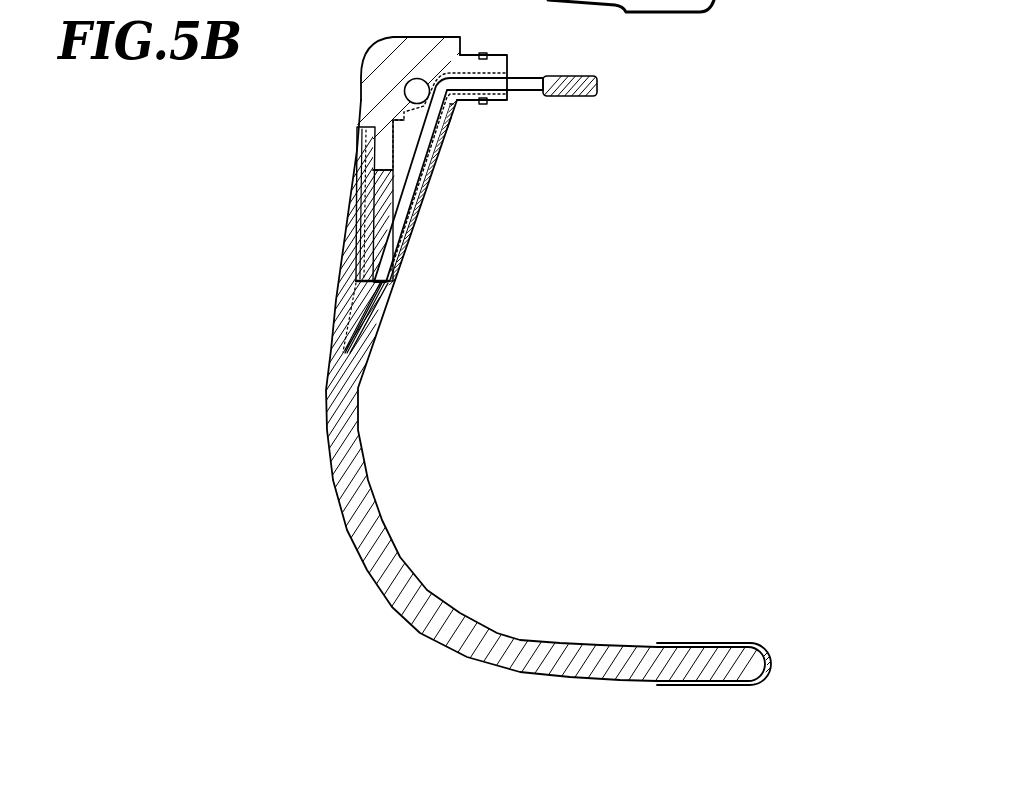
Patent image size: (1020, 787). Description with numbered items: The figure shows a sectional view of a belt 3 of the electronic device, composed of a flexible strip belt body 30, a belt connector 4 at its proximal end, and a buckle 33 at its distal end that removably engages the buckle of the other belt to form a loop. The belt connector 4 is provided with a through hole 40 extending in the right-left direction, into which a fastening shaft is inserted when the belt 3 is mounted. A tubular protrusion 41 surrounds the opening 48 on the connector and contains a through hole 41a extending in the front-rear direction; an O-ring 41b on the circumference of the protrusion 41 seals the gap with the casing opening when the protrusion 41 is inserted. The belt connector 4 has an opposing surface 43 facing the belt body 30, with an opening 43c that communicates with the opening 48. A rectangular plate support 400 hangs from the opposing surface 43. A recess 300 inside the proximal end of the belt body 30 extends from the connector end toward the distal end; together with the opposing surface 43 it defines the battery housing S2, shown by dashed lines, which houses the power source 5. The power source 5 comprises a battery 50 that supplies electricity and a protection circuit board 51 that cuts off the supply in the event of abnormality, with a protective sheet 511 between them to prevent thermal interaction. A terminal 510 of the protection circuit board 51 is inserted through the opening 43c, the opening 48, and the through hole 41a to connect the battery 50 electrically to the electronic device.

The belt 3 is at (531, 357).
The belt body 30 is at (326, 414).
The buckle 33 is at (764, 649).
The belt connector 4 is at (365, 67).
The through hole 40 is at (412, 78).
The protrusion 41 is at (517, 95).
The through hole 41a is at (509, 76).
The O-ring 41b is at (487, 53).
The opposing surface 43 is at (357, 130).
The opening 43c is at (449, 131).
The opening 48 is at (468, 71).
The battery 50 is at (376, 280).
The protection circuit board 51 is at (399, 217).
The protective sheet 511 is at (387, 243).
The power source 5 is at (429, 304).
The terminal 510 is at (575, 96).
The recess 300 is at (404, 208).
The support 400 is at (357, 268).
The battery housing S2 is at (413, 182).